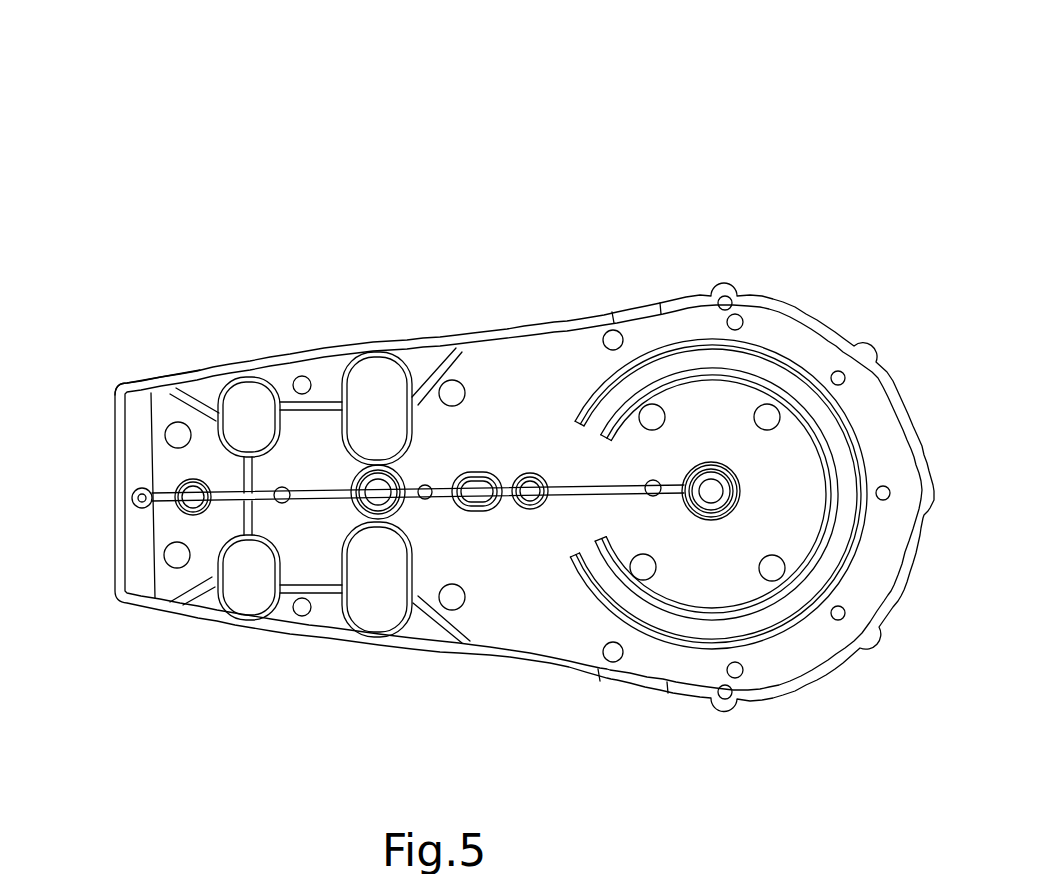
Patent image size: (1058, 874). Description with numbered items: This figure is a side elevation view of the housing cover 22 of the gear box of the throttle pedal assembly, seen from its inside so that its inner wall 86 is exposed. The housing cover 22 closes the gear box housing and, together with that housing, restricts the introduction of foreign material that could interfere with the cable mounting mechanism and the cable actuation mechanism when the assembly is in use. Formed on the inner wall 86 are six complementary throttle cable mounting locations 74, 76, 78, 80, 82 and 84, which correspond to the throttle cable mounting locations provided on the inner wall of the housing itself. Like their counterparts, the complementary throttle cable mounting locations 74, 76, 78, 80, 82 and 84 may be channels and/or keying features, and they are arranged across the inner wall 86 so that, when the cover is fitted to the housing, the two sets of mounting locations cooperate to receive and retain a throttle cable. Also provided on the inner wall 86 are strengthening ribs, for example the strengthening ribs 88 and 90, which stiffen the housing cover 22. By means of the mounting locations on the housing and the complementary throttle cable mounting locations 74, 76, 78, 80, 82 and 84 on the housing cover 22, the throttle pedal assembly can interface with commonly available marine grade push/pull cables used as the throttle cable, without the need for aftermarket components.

The housing cover 22 is at (103, 158).
The complementary throttle cable mounting location 74 is at (142, 583).
The complementary throttle cable mounting location 76 is at (137, 405).
The complementary throttle cable mounting location 78 is at (247, 593).
The complementary throttle cable mounting location 80 is at (252, 407).
The complementary throttle cable mounting location 82 is at (373, 590).
The complementary throttle cable mounting location 84 is at (383, 405).
The inner wall 86 is at (529, 556).
The strengthening rib 88 is at (302, 387).
The strengthening rib 90 is at (235, 462).